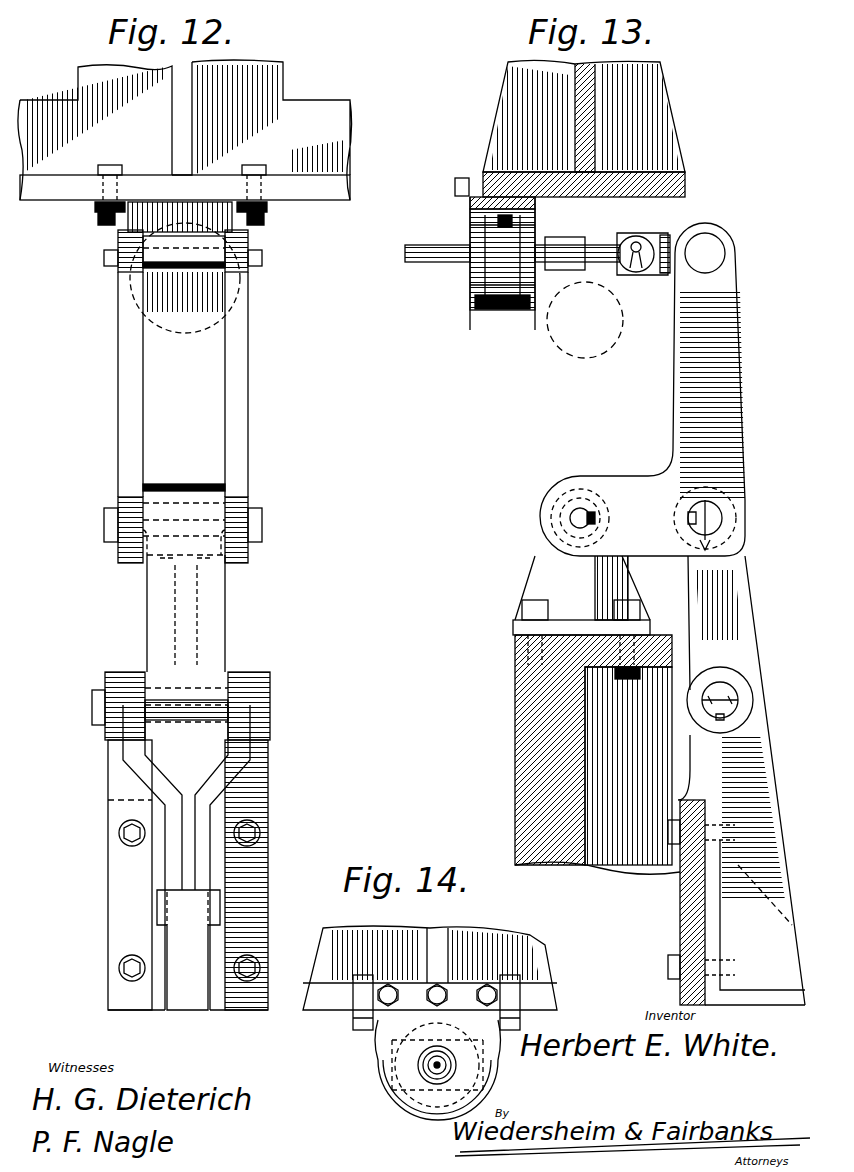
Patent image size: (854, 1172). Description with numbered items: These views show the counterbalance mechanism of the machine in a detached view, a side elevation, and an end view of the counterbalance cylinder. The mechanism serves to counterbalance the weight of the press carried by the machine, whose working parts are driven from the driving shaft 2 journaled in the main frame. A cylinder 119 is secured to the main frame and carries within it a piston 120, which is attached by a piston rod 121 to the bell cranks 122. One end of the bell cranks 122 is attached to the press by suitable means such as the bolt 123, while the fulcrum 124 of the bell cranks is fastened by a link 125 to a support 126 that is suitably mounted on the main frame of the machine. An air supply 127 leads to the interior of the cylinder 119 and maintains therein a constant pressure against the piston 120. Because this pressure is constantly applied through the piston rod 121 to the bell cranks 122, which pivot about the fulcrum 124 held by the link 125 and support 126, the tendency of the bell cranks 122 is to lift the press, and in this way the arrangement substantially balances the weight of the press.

In FIG. 13, the driving shaft 2 is at (560, 348).
In FIG. 12, the cylinder 119 is at (184, 316).
In FIG. 13, the cylinder 119 is at (497, 306).
In FIG. 14, the cylinder 119 is at (396, 1110).
In FIG. 13, the piston 120 is at (472, 290).
In FIG. 13, the piston rod 121 is at (598, 250).
In FIG. 12, the bell cranks 122 is at (236, 418).
In FIG. 13, the bell cranks 122 is at (680, 423).
In FIG. 13, the bolt 123 is at (568, 521).
In FIG. 13, the fulcrum 124 is at (722, 523).
In FIG. 12, the link 125 is at (212, 624).
In FIG. 13, the link 125 is at (730, 618).
In FIG. 12, the support 126 is at (226, 772).
In FIG. 13, the support 126 is at (736, 902).
In FIG. 13, the air supply 127 is at (418, 265).
In FIG. 14, the air supply 127 is at (424, 1062).